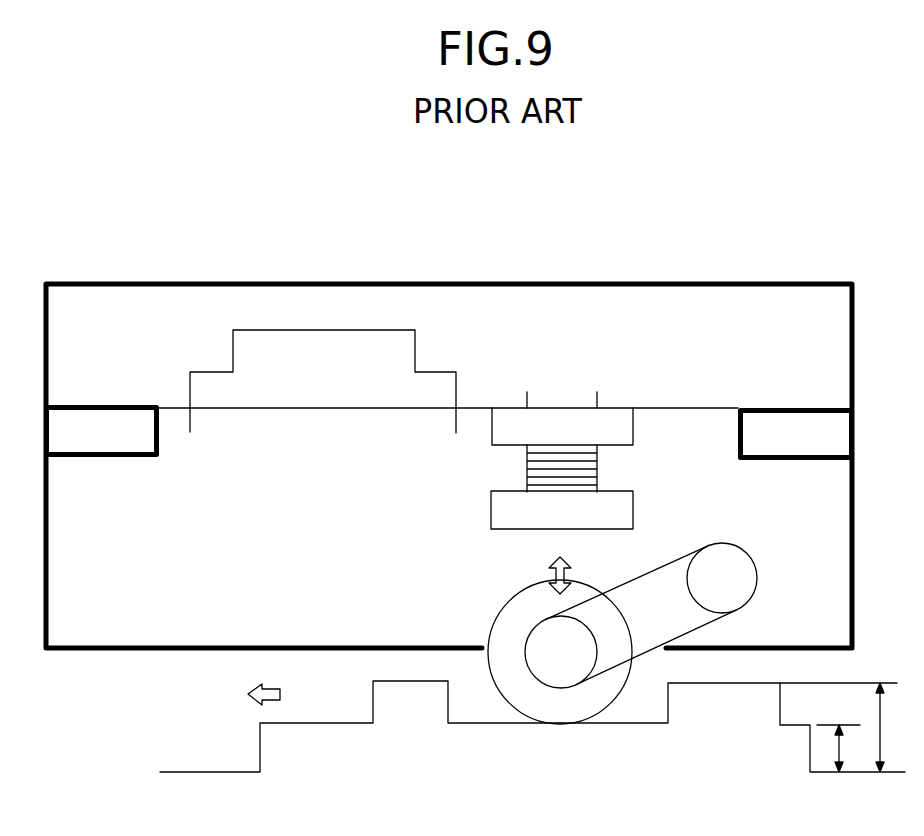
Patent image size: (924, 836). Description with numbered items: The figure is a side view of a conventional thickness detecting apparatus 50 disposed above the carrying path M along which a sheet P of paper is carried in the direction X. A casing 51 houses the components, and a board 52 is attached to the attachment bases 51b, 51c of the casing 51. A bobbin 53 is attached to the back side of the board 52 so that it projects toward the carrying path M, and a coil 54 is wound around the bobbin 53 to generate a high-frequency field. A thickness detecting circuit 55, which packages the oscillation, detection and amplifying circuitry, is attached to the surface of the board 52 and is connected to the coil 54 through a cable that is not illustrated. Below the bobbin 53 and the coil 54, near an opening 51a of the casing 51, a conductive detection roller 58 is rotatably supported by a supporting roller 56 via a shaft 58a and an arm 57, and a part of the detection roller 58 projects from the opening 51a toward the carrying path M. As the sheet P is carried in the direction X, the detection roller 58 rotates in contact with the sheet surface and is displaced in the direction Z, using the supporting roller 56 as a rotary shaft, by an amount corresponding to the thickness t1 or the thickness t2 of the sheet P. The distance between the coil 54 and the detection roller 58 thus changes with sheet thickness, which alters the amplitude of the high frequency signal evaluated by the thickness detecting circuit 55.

The thickness detecting apparatus 50 is at (768, 220).
The casing 51 is at (528, 283).
The opening 51a is at (483, 652).
The attachment base 51b is at (102, 420).
The attachment base 51c is at (809, 425).
The board 52 is at (668, 408).
The bobbin 53 is at (633, 430).
The coil 54 is at (597, 463).
The thickness detecting circuit 55 is at (408, 355).
The supporting roller 56 is at (750, 564).
The arm 57 is at (668, 584).
The detection roller 58 is at (501, 608).
The shaft 58a is at (557, 663).
The carrying path M is at (210, 770).
The sheet of paper P is at (728, 683).
The direction X is at (268, 686).
The direction Z is at (556, 560).
The thickness t1 is at (845, 749).
The thickness t2 is at (895, 727).